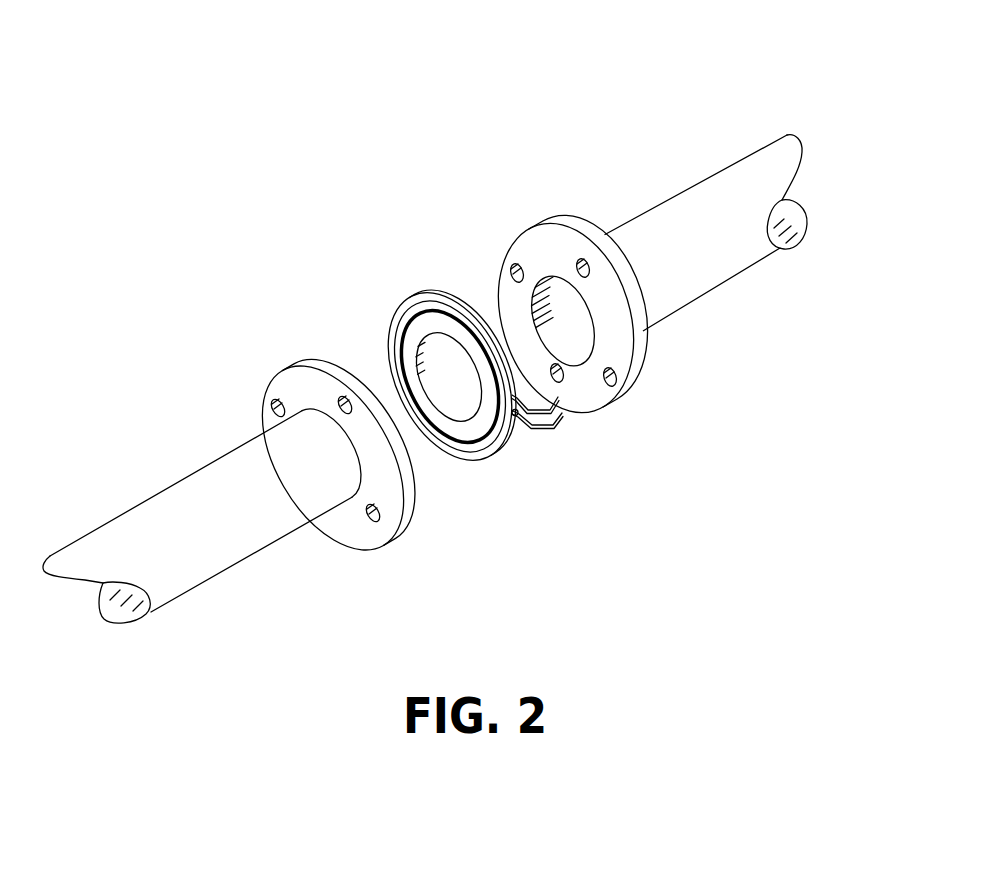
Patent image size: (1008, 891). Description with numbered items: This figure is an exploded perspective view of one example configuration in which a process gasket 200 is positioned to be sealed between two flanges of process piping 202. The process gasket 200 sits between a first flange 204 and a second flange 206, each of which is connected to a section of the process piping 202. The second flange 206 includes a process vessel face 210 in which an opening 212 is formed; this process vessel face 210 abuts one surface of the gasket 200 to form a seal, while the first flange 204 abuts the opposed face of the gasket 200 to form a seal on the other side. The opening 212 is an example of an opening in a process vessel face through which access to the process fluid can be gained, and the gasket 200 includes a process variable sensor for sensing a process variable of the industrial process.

The process gasket 200 is at (413, 290).
The process piping 202 is at (700, 210).
The flange 204 is at (383, 533).
The flange 206 is at (643, 388).
The process vessel face 210 is at (627, 347).
The opening 212 is at (558, 323).